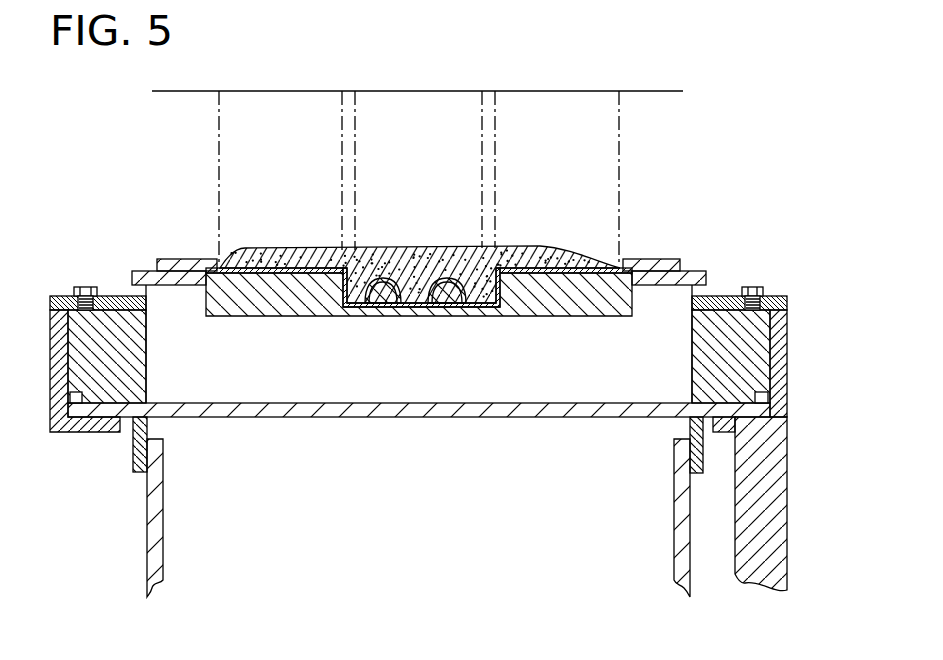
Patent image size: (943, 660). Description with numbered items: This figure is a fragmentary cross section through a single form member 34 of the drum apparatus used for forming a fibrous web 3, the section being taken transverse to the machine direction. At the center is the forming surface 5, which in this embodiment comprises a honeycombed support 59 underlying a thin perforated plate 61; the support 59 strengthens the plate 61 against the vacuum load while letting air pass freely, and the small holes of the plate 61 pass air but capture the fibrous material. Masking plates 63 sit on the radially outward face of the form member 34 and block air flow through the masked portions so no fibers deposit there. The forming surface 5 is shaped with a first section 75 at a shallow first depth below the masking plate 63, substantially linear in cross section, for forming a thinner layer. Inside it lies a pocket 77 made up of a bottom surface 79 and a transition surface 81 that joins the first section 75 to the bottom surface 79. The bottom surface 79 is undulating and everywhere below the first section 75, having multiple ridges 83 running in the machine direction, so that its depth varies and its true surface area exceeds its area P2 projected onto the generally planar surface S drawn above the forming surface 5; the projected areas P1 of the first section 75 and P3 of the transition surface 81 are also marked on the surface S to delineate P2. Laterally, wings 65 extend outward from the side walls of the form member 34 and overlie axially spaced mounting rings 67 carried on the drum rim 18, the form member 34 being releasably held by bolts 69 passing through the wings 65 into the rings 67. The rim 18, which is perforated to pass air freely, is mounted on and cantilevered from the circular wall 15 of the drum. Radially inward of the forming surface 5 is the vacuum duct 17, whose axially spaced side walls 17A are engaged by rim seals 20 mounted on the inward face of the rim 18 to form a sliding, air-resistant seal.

The fibrous web 3 is at (570, 238).
The forming surface 5 is at (412, 260).
The circular wall 15 is at (766, 510).
The vacuum duct 17 is at (146, 490).
The side walls 17A is at (157, 507).
The drum rim 18 is at (527, 411).
The rim seals 20 is at (138, 453).
The form member 34 is at (716, 263).
The honeycombed support 59 is at (588, 303).
The perforated plate 61 is at (283, 273).
The masking plates 63 is at (187, 259).
The wings 65 is at (63, 296).
The mounting rings 67 is at (98, 344).
The bolts 69 is at (84, 286).
The first section 75 is at (267, 268).
The pocket 77 is at (440, 268).
The bottom surface 79 is at (428, 300).
The transition surface 81 is at (357, 292).
The ridges 83 is at (387, 292).
The projected area of the first section P1 is at (277, 91).
The projected area of the bottom surface P2 is at (420, 91).
The projected area of the transition surface P3 is at (350, 91).
The planar surface S is at (637, 91).